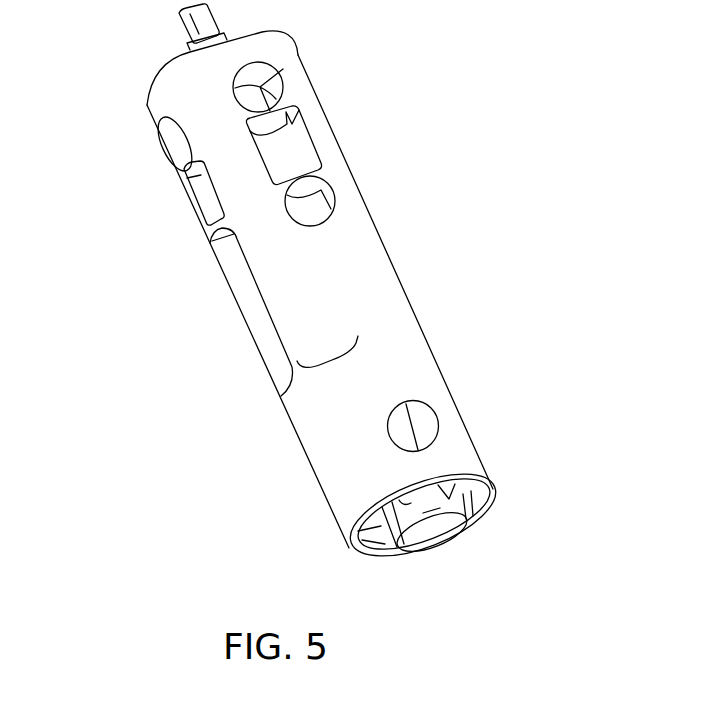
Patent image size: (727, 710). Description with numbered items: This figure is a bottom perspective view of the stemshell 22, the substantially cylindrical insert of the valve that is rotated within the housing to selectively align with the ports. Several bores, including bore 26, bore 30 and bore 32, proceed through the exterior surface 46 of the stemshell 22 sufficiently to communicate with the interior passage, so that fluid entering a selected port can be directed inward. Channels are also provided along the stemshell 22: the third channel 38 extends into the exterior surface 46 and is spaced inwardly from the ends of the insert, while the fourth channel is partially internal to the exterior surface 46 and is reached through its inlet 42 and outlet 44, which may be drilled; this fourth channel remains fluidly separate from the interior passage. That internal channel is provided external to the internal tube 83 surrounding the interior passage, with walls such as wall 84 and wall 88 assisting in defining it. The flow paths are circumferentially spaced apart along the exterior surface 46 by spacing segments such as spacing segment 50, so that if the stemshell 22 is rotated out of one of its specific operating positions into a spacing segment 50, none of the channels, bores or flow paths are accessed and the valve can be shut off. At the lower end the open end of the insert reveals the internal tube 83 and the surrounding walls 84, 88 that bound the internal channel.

The stemshell 22 is at (320, 321).
The bore 26 is at (488, 482).
The bore 30 is at (173, 143).
The bore 32 is at (283, 69).
The third channel 38 is at (246, 295).
The inlet 42 is at (421, 418).
The outlet 44 is at (334, 189).
The exterior surface 46 is at (342, 317).
The spacing segment 50 is at (327, 368).
The internal tube 83 is at (490, 505).
The wall 84 is at (345, 516).
The wall 88 is at (323, 171).